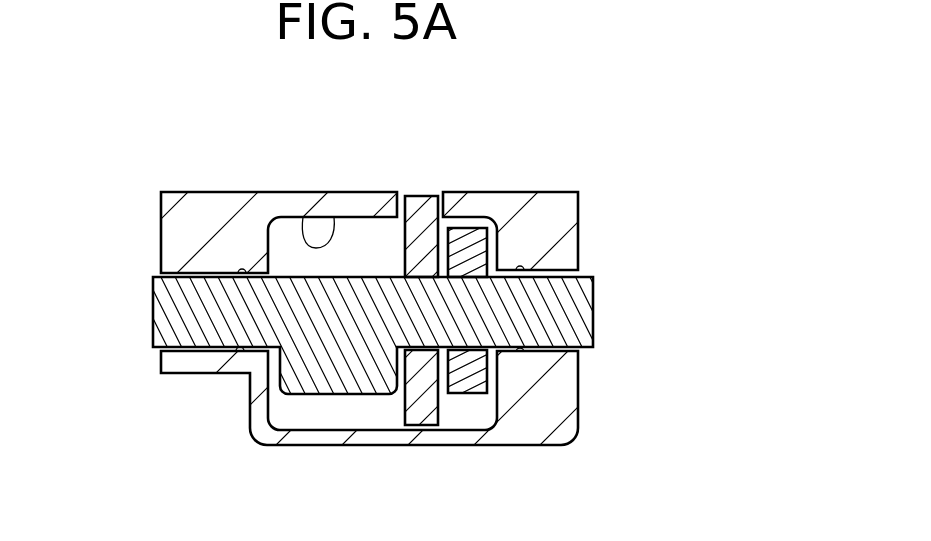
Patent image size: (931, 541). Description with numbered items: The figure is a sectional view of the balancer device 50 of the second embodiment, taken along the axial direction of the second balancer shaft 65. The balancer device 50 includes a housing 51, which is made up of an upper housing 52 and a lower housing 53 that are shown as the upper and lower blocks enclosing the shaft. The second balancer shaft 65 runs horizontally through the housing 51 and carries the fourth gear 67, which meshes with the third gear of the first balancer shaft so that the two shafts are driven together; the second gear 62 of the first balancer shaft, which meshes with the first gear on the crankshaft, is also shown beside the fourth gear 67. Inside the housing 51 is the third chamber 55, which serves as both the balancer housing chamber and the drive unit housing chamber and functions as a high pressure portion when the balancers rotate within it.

The balancer device 50 is at (437, 295).
The housing 51 is at (451, 317).
The upper housing 52 is at (578, 246).
The lower housing 53 is at (578, 387).
The third chamber 55 is at (312, 217).
The second gear 62 is at (422, 196).
The second balancer shaft 65 is at (152, 318).
The fourth gear 67 is at (468, 228).